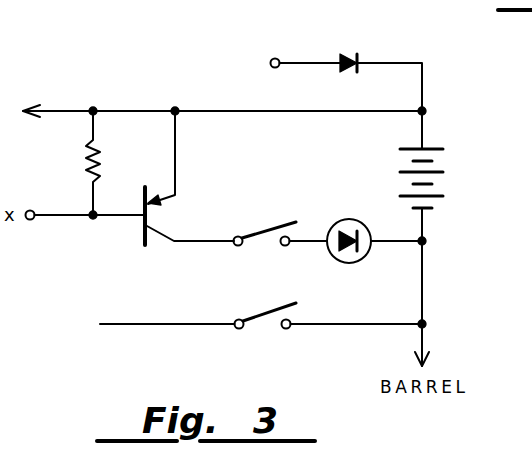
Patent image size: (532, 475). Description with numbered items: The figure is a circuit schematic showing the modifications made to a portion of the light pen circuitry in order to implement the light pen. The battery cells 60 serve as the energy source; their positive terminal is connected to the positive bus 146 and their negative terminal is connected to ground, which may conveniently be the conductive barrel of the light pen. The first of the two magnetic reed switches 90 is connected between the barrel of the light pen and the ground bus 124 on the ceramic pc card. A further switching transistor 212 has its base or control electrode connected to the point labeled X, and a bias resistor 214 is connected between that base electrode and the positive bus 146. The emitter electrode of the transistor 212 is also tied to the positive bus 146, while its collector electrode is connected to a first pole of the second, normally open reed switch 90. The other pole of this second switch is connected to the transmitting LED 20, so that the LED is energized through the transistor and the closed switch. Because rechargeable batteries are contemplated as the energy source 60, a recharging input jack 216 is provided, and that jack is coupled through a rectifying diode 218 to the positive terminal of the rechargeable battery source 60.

The positive bus 146 is at (55, 110).
The bias resistor 214 is at (103, 170).
The switching transistor 212 is at (152, 214).
The recharging input jack 216 is at (272, 57).
The rectifying diode 218 is at (345, 53).
The battery cells 60 is at (435, 162).
The magnetic reed switches 90 is at (264, 234).
The transmitting LED 20 is at (351, 263).
The ground bus 124 is at (141, 326).